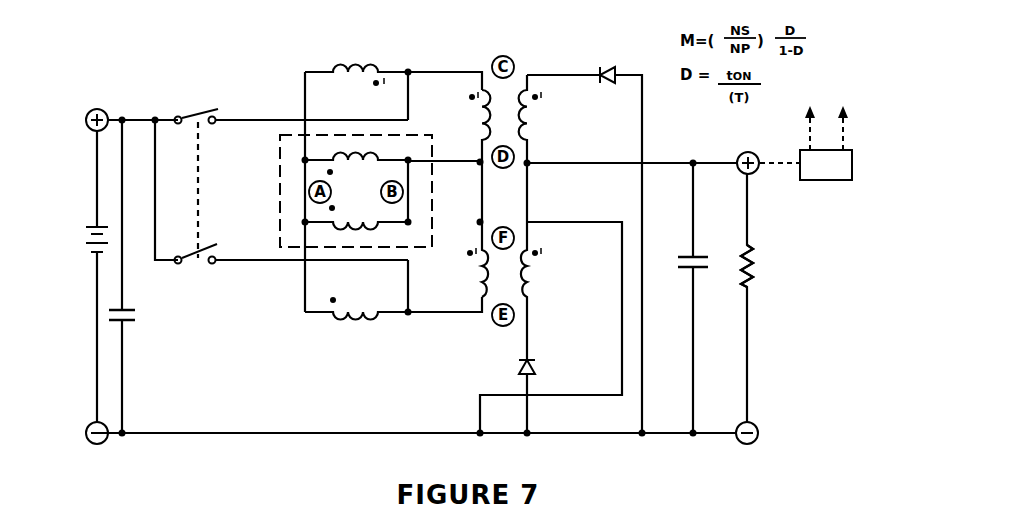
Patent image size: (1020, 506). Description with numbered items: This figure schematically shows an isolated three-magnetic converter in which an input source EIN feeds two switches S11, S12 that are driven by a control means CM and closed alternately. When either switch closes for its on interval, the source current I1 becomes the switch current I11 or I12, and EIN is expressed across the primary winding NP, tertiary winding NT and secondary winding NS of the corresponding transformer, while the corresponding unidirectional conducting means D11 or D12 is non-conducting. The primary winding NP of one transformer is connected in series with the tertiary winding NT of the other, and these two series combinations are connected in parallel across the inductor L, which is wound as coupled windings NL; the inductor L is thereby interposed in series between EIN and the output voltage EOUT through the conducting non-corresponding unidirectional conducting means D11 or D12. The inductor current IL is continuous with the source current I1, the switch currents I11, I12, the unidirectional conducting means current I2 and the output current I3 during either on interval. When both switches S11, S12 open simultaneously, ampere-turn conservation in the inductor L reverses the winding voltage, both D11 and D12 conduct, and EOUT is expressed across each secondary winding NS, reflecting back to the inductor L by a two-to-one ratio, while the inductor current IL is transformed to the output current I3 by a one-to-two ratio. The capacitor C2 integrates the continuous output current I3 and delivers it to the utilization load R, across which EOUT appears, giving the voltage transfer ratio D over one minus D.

The switch S11 is at (197, 103).
The switch S12 is at (196, 265).
The input voltage source EIN is at (64, 249).
The tertiary winding NT is at (355, 192).
The inductor winding NL is at (355, 191).
The inductor L is at (272, 216).
The primary winding NP is at (463, 193).
The secondary winding NS is at (545, 193).
The unidirectional conducting means D11 is at (607, 89).
The unidirectional conducting means D12 is at (508, 368).
The capacitor C2 is at (677, 264).
The utilization load R is at (723, 274).
The output voltage EOUT is at (773, 298).
The control means CM is at (823, 141).
The source current I1 is at (148, 103).
The switch current I11 is at (266, 103).
The switch current I12 is at (266, 272).
The inductor current IL is at (474, 168).
The unidirectional conducting means current I2 is at (585, 23).
The output current I3 is at (684, 148).